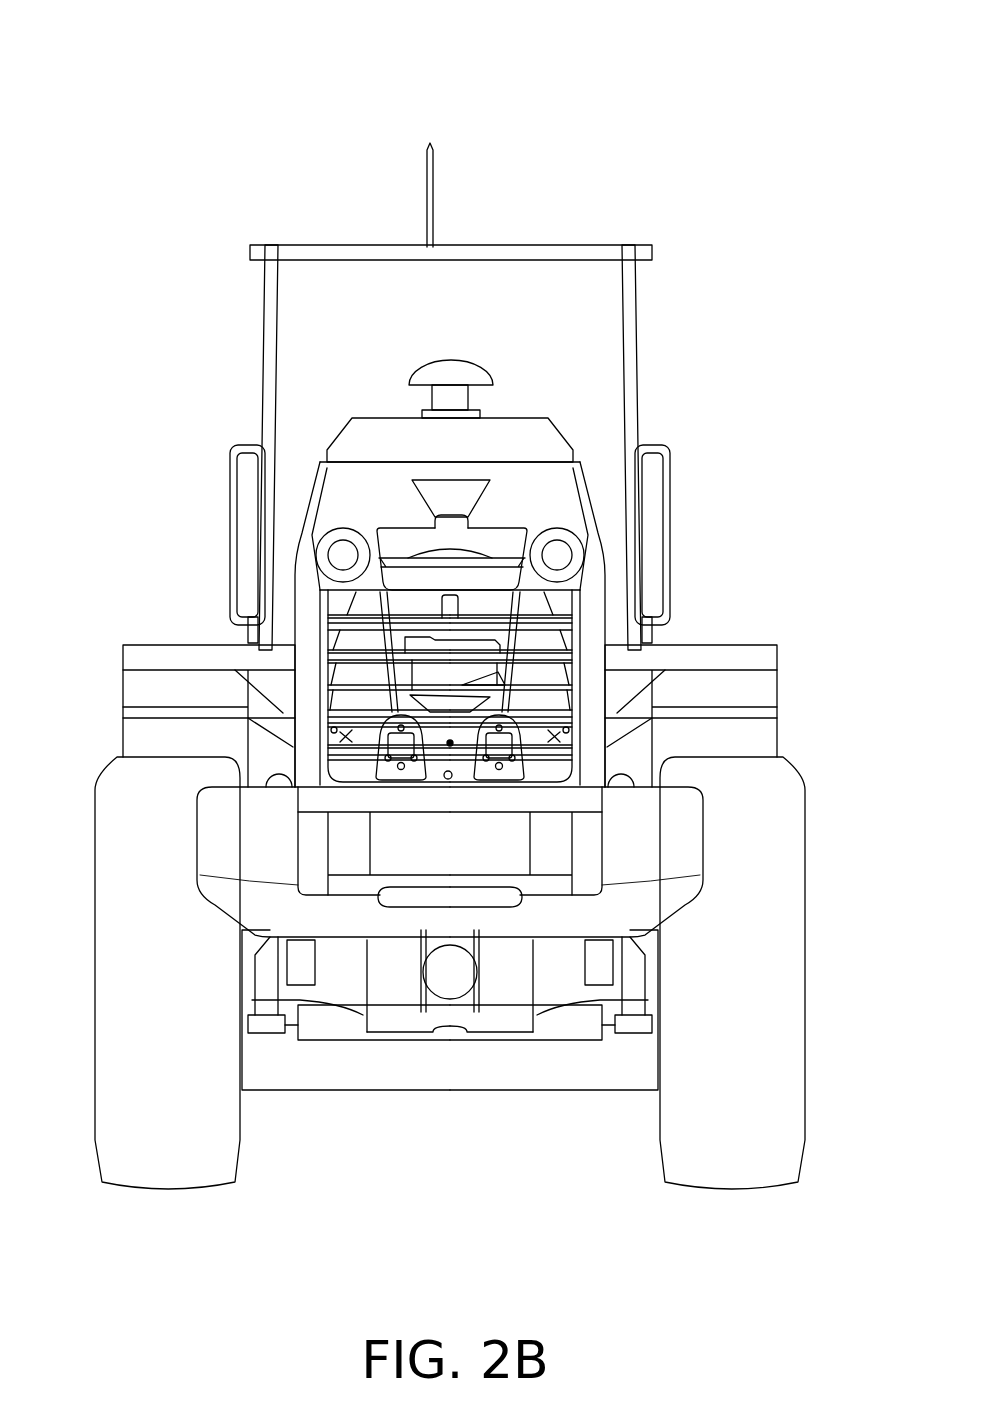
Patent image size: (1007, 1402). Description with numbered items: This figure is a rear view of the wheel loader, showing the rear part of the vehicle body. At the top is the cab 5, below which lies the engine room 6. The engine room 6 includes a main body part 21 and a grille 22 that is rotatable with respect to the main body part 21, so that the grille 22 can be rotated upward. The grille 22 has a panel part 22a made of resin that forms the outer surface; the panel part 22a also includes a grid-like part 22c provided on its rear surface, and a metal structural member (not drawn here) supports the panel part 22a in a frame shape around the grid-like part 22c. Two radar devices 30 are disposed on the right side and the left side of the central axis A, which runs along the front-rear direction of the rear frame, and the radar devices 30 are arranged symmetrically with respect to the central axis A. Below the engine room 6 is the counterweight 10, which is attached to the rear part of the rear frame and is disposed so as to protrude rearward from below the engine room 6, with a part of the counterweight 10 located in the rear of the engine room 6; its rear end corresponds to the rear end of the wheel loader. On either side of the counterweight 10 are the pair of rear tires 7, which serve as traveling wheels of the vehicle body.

The counterweight 10 is at (450, 628).
The cab 5 is at (578, 247).
The engine room 6 is at (428, 548).
The main body part 21 is at (353, 460).
The grille 22 is at (428, 605).
The panel part 22a is at (337, 485).
The grid-like part 22c is at (540, 658).
The radar device 30 is at (380, 709).
The rear tire 7 is at (173, 1165).
The central axis A is at (450, 743).